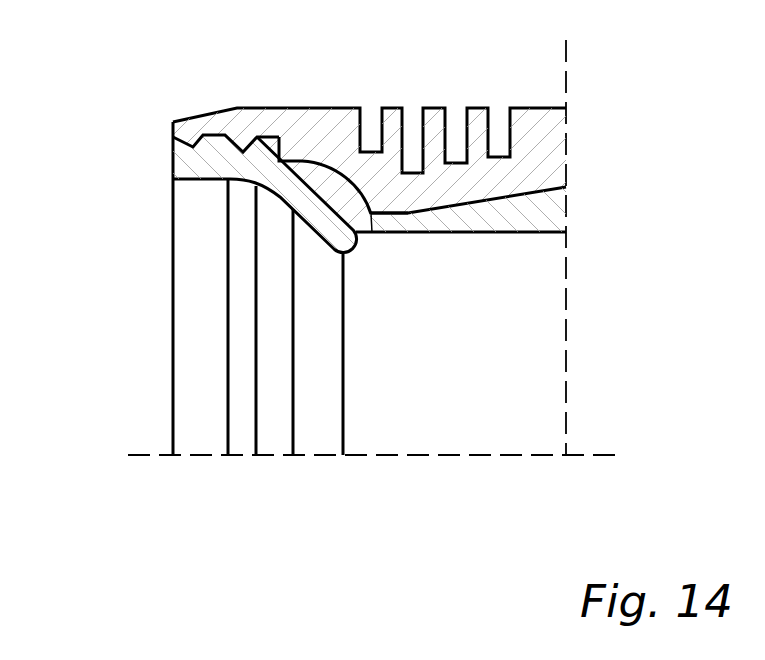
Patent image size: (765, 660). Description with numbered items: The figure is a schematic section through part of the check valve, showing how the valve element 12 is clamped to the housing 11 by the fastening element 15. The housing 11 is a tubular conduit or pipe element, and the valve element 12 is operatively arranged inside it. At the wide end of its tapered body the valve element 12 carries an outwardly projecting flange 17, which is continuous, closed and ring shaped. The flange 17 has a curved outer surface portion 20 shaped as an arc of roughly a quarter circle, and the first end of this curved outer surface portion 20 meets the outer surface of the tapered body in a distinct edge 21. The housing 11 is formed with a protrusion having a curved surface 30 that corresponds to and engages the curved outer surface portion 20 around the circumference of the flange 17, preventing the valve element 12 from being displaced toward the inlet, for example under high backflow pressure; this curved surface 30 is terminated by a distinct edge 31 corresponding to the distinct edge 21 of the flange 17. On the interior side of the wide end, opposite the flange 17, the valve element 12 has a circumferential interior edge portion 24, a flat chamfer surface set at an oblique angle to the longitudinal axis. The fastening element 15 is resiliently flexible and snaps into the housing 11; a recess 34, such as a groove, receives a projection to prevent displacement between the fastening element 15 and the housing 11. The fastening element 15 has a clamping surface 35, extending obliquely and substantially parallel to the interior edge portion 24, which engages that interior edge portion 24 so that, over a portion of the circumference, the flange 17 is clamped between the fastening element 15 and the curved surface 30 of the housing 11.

The housing 11 is at (535, 118).
The valve element 12 is at (557, 224).
The fastening element 15 is at (180, 162).
The flange 17 is at (288, 169).
The curved outer surface portion 20 is at (303, 173).
The distinct edge 21 is at (371, 214).
The interior edge portion 24 is at (228, 181).
The curved surface 30 is at (343, 163).
The distinct edge 31 is at (371, 213).
The recess 34 is at (241, 148).
The clamping surface 35 is at (337, 222).